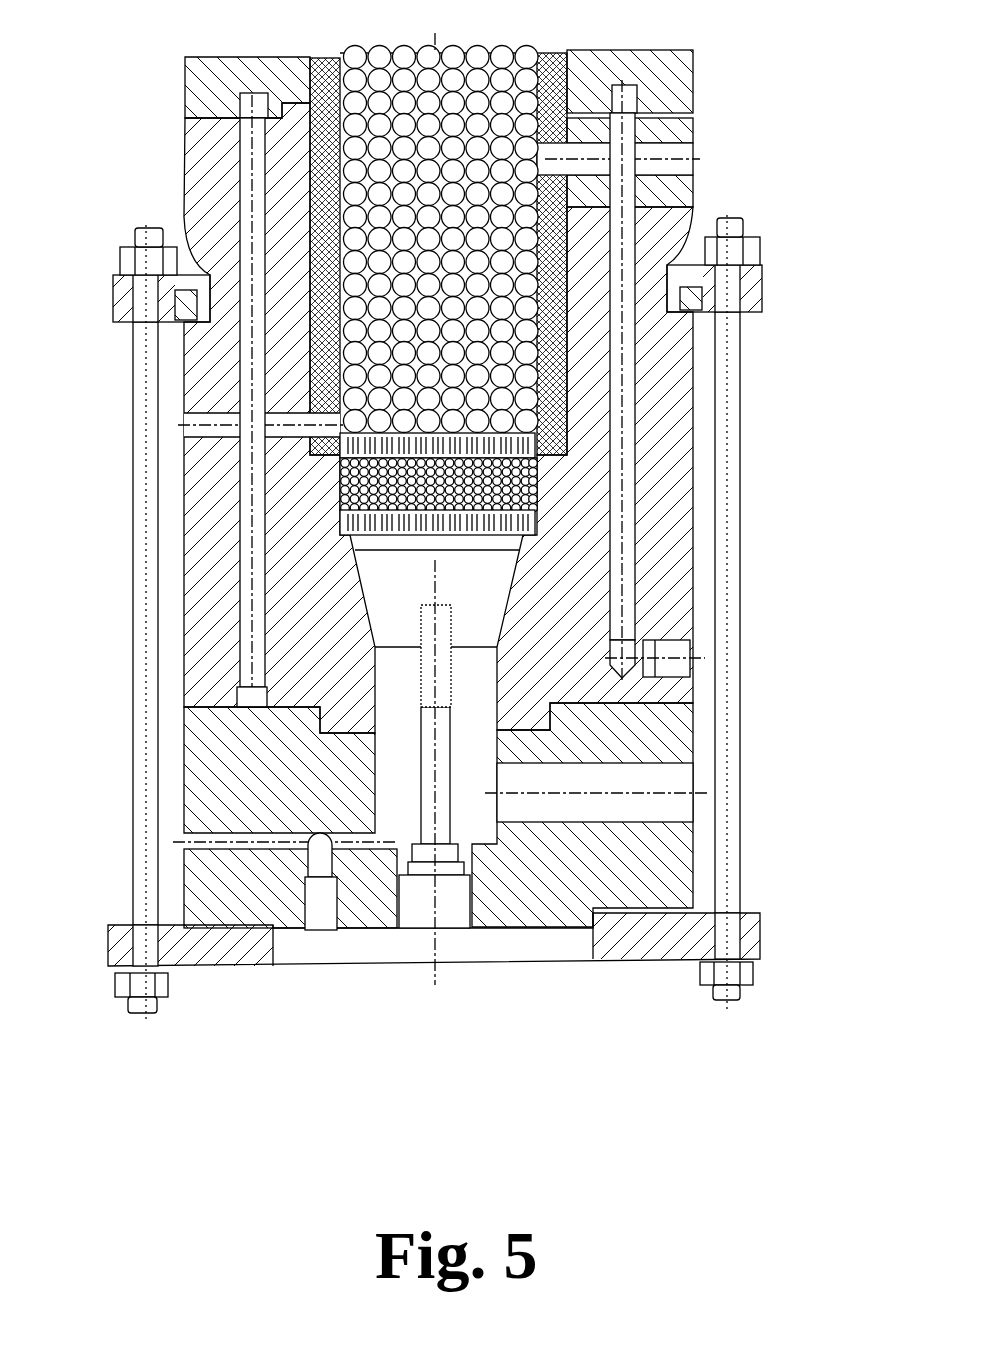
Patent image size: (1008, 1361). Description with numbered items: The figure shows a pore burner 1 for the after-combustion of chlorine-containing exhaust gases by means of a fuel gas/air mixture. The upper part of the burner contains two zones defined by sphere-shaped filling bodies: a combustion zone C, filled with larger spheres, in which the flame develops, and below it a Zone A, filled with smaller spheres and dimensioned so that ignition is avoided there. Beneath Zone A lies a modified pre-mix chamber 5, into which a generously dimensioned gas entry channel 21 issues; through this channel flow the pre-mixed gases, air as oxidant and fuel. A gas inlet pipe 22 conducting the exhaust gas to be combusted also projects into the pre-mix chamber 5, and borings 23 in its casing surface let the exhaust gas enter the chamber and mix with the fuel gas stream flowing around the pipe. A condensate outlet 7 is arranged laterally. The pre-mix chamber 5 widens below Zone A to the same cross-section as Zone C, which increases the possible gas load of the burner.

The pore burner 1 is at (119, 484).
The Zone C is at (458, 264).
The Zone A is at (515, 483).
The borings 23 is at (458, 662).
The gas entry channel 21 is at (650, 798).
The gas inlet pipe 22 is at (432, 800).
The condensate outlet 7 is at (303, 930).
The pre-mix chamber 5 is at (400, 805).